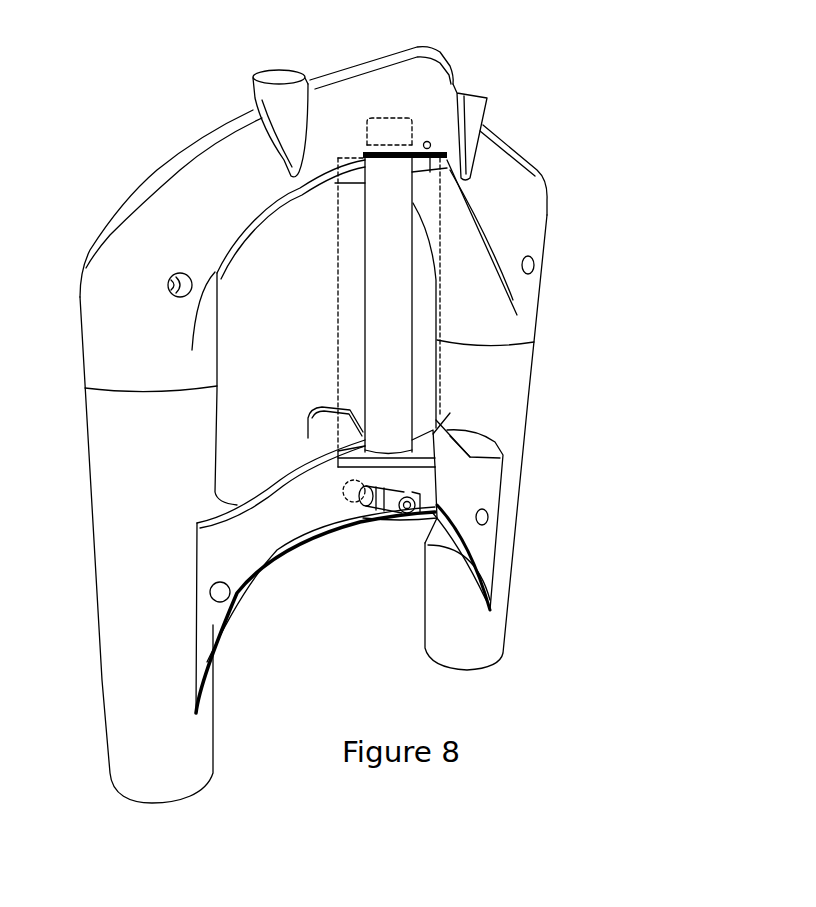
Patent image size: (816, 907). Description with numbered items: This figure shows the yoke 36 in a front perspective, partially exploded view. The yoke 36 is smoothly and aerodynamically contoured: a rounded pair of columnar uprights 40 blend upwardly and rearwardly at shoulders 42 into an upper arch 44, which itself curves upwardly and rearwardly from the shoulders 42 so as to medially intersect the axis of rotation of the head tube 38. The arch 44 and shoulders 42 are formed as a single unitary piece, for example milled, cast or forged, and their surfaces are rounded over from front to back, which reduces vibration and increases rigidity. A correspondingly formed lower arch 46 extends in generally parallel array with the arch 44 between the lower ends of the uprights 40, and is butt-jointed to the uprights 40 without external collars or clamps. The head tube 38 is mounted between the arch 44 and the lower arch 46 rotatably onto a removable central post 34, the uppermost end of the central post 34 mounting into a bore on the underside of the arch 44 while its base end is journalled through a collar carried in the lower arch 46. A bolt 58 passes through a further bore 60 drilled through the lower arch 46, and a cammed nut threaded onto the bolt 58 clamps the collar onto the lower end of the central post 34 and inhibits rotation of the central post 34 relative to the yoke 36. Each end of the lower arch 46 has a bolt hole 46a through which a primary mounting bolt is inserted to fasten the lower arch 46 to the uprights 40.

The central post 34 is at (365, 333).
The yoke 36 is at (558, 316).
The head tube 38 is at (338, 288).
The columnar uprights 40 is at (100, 655).
The shoulders 42 is at (100, 232).
The arch 44 is at (340, 67).
The lower arch 46 is at (265, 548).
The bolt hole 46a is at (223, 598).
The bolt 58 is at (402, 514).
The bore 60 is at (365, 510).